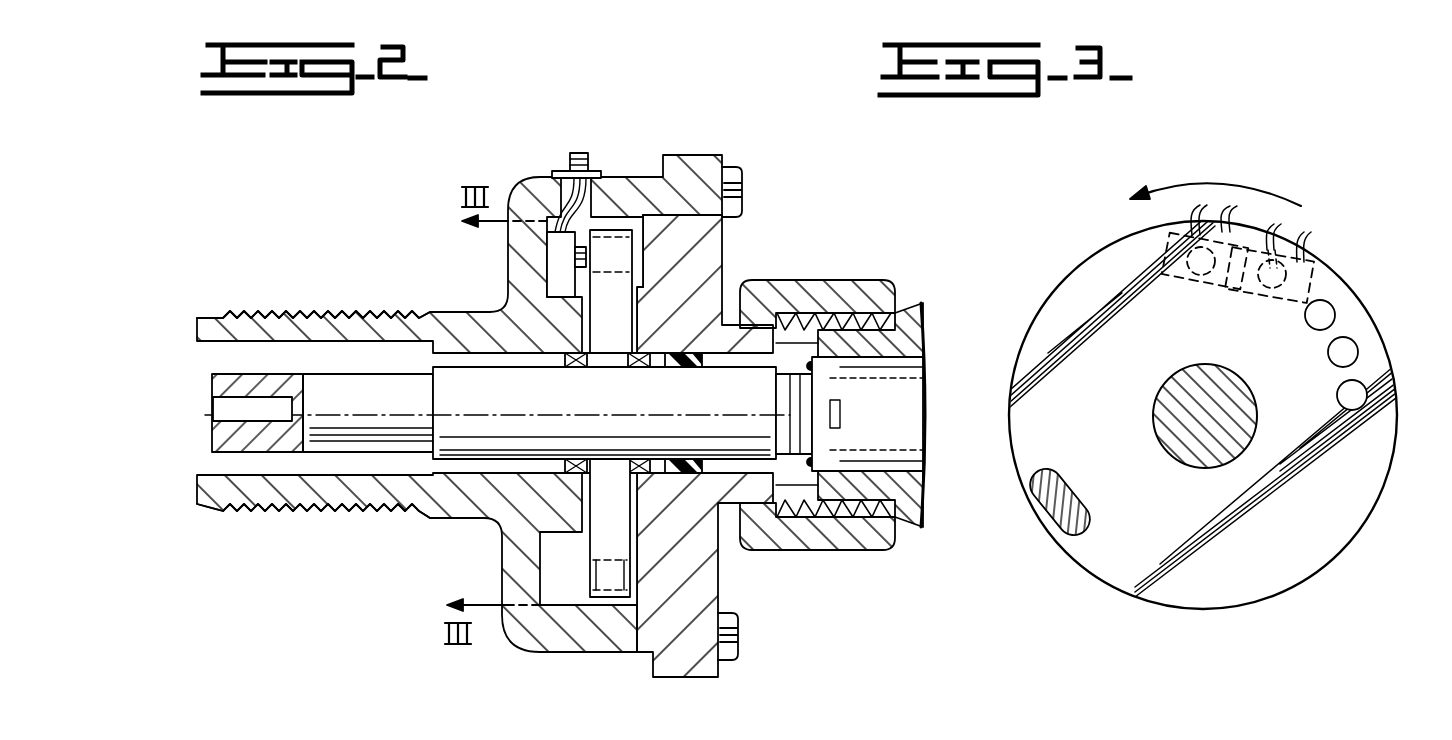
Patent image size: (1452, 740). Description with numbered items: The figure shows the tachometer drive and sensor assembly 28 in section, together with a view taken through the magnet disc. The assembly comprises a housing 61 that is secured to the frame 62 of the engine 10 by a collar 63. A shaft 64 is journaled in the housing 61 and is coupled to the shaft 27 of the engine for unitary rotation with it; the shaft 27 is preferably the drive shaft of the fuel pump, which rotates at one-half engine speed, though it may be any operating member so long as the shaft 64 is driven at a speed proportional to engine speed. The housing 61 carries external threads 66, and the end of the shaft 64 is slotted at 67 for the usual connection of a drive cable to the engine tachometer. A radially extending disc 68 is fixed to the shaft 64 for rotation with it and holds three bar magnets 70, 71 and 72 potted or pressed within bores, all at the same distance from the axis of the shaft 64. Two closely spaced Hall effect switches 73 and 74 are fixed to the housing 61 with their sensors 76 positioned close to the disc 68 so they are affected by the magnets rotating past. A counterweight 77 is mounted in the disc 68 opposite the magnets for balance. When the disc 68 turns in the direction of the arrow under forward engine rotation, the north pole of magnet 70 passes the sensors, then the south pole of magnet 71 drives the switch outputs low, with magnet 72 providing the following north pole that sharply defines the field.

In FIG. 2, the engine 10 is at (948, 492).
In FIG. 2, the shaft 27 is at (893, 415).
In FIG. 2, the tachometer drive and sensor assembly 28 is at (503, 168).
In FIG. 2, the housing 61 is at (707, 240).
In FIG. 2, the frame 62 is at (917, 322).
In FIG. 2, the collar 63 is at (790, 297).
In FIG. 2, the shaft 64 is at (562, 413).
In FIG. 2, the external threads 66 is at (345, 312).
In FIG. 2, the slot 67 is at (216, 410).
In FIG. 2, the disc 68 is at (628, 338).
In FIG. 3, the disc 68 is at (1134, 401).
In FIG. 3, the bar magnet 70 is at (1335, 312).
In FIG. 2, the bar magnet 71 is at (608, 243).
In FIG. 3, the bar magnet 71 is at (1358, 350).
In FIG. 3, the bar magnet 72 is at (1365, 390).
In FIG. 3, the Hall effect switch 73 is at (1315, 275).
In FIG. 2, the Hall effect switch 74 is at (556, 270).
In FIG. 3, the Hall effect switch 74 is at (1150, 236).
In FIG. 2, the sensors 76 is at (560, 257).
In FIG. 3, the sensors 76 is at (1262, 283).
In FIG. 2, the counterweight 77 is at (588, 583).
In FIG. 3, the counterweight 77 is at (1060, 518).